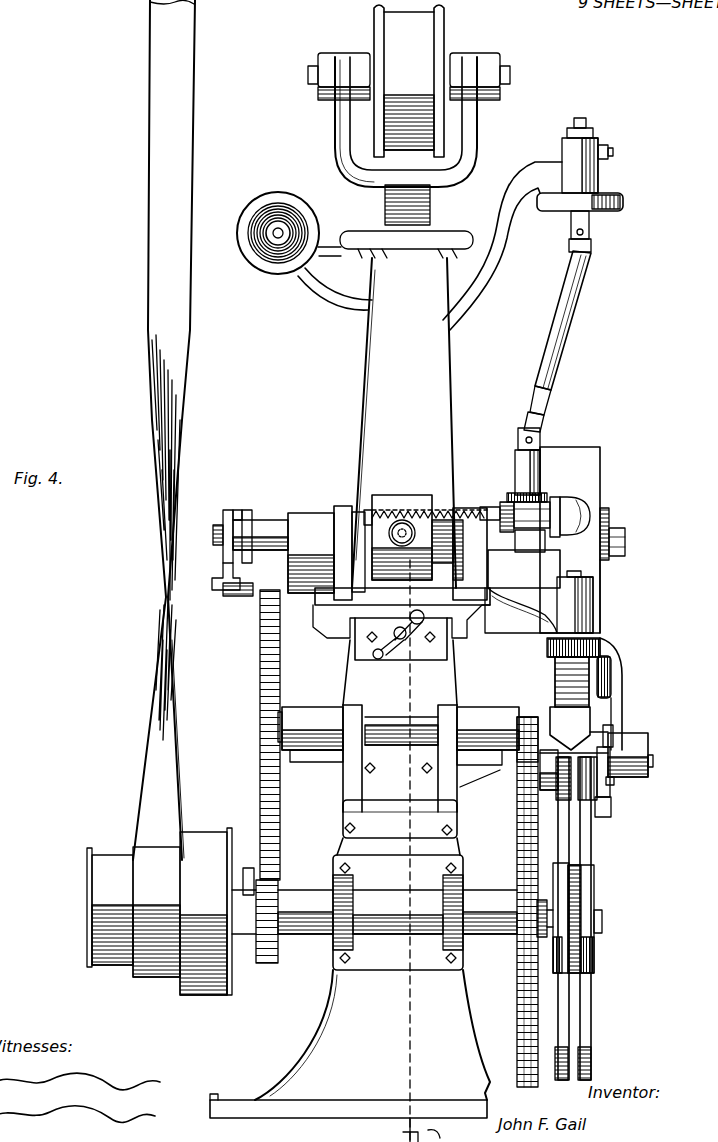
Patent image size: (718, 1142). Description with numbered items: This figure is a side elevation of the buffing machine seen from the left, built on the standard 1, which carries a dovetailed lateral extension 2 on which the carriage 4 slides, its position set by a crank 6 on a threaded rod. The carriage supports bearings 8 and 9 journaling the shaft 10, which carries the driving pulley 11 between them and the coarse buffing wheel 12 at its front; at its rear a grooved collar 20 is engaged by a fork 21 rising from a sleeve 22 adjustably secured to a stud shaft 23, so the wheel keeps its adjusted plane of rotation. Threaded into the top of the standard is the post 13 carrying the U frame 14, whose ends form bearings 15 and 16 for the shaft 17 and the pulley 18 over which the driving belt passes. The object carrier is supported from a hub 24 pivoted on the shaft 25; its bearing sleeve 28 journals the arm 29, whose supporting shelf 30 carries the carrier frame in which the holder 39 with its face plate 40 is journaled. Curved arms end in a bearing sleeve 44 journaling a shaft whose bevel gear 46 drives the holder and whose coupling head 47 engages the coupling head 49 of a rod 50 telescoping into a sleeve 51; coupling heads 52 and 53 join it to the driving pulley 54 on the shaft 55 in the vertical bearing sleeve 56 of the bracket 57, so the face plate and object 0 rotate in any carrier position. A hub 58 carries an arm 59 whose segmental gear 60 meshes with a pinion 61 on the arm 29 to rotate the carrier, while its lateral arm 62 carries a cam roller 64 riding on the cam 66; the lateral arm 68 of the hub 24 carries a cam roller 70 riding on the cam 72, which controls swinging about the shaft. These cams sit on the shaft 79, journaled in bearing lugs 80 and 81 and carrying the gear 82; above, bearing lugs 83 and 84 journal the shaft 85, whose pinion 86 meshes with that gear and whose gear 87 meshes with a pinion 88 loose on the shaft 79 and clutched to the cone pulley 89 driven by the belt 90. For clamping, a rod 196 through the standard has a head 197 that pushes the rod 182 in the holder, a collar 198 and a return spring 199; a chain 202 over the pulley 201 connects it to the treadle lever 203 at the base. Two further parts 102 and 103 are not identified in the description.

The standard 1 is at (412, 298).
The dovetailed lateral extension 2 is at (452, 640).
The carriage 4 is at (478, 620).
The crank 6 is at (380, 660).
The bearing 8 is at (470, 554).
The bearing 9 is at (311, 513).
The shaft 10 is at (266, 520).
The driving pulley 11 is at (402, 495).
The coarse buffing wheel 12 is at (600, 594).
The post 13 is at (432, 207).
The U frame 14 is at (340, 136).
The bearing 15 is at (500, 66).
The bearing 16 is at (342, 55).
The shaft 17 is at (455, 80).
The pulley 18 is at (409, 81).
The grooved collar 20 is at (222, 516).
The fork 21 is at (218, 546).
The sleeve 22 is at (232, 597).
The stud shaft 23 is at (212, 583).
The hub 24 is at (606, 742).
The shaft 25 is at (654, 764).
The bearing sleeve 28 is at (590, 715).
The arm 29 is at (622, 680).
The supporting shelf 30 is at (524, 569).
The holder 39 is at (500, 510).
The face plate 40 is at (557, 496).
The object 0 is at (584, 498).
The bearing sleeve 44 is at (516, 462).
The bevel gear 46 is at (510, 495).
The coupling head 47 is at (538, 440).
The coupling head 49 is at (525, 422).
The rod 50 is at (549, 396).
The sleeve 51 is at (560, 336).
The coupling head 52 is at (591, 246).
The coupling head 53 is at (592, 228).
The driving pulley 54 is at (620, 204).
The shaft 55 is at (590, 126).
The vertical bearing sleeve 56 is at (600, 166).
The bracket 57 is at (538, 163).
The hub 58 is at (612, 784).
The arm 59 is at (613, 726).
The segmental gear 60 is at (612, 645).
The pinion 61 is at (593, 656).
The lateral arm 62 is at (611, 800).
The cam roller 64 is at (590, 822).
The cam 66 is at (592, 1040).
The lateral arm 68 is at (649, 746).
The cam roller 70 is at (556, 800).
The cam 72 is at (572, 1000).
The shaft 79 is at (395, 912).
The bearing lug 80 is at (481, 895).
The bearing lug 81 is at (303, 893).
The gear 82 is at (515, 803).
The bearing lug 83 is at (478, 708).
The bearing lug 84 is at (314, 707).
The shaft 85 is at (395, 724).
The pinion 86 is at (528, 717).
The gear 87 is at (258, 692).
The pinion 88 is at (268, 964).
The cone pulley 89 is at (198, 990).
The belt 90 is at (188, 244).
The arm 102 is at (320, 300).
The idler pulley 103 is at (266, 195).
The rod 182 is at (480, 512).
The rod 196 is at (428, 512).
The head 197 is at (478, 524).
The collar 198 is at (396, 524).
The spring 199 is at (412, 500).
The pulley 201 is at (368, 514).
The chain 202 is at (412, 681).
The treadle lever 203 is at (438, 1130).